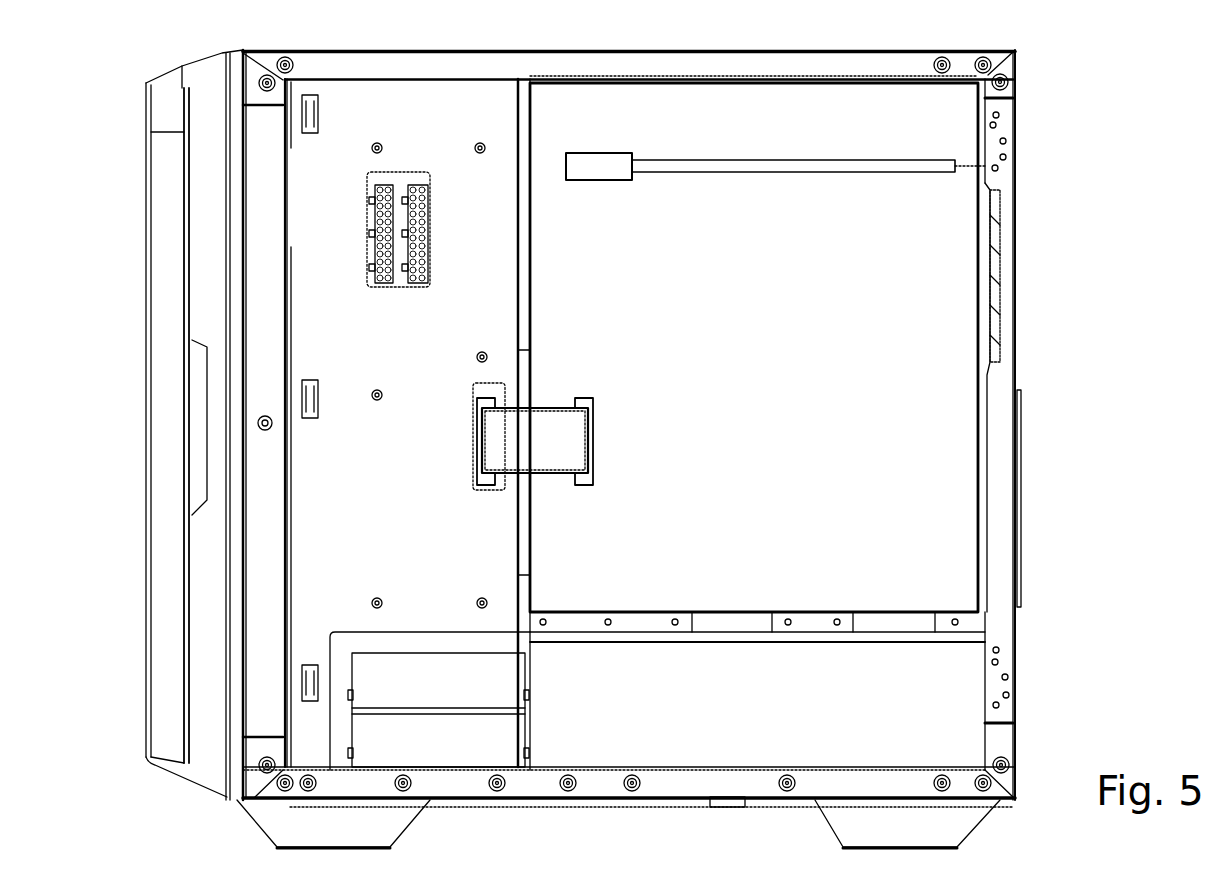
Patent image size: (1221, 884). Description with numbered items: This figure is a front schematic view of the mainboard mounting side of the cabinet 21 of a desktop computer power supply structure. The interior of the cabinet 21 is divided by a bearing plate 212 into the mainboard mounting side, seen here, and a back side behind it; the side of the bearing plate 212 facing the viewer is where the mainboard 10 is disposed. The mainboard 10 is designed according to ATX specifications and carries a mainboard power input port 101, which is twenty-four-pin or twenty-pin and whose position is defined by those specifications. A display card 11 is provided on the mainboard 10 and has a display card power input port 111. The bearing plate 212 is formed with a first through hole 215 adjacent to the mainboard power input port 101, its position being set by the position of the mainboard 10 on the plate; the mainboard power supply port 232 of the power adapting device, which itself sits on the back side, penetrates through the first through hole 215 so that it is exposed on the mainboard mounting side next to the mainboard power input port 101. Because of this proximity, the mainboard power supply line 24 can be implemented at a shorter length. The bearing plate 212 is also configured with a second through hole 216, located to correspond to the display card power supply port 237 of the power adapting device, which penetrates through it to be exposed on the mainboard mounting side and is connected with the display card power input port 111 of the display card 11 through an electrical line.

The mainboard 10 is at (980, 334).
The display card 11 is at (998, 167).
The display card power input port 111 is at (596, 153).
The cabinet 21 is at (232, 797).
The bearing plate 212 is at (307, 623).
The first through hole 215 is at (473, 467).
The second through hole 216 is at (367, 257).
The mainboard power supply port 232 is at (473, 410).
The display card power supply port 237 is at (418, 185).
The mainboard power input port 101 is at (593, 408).
The mainboard power supply line 24 is at (557, 476).